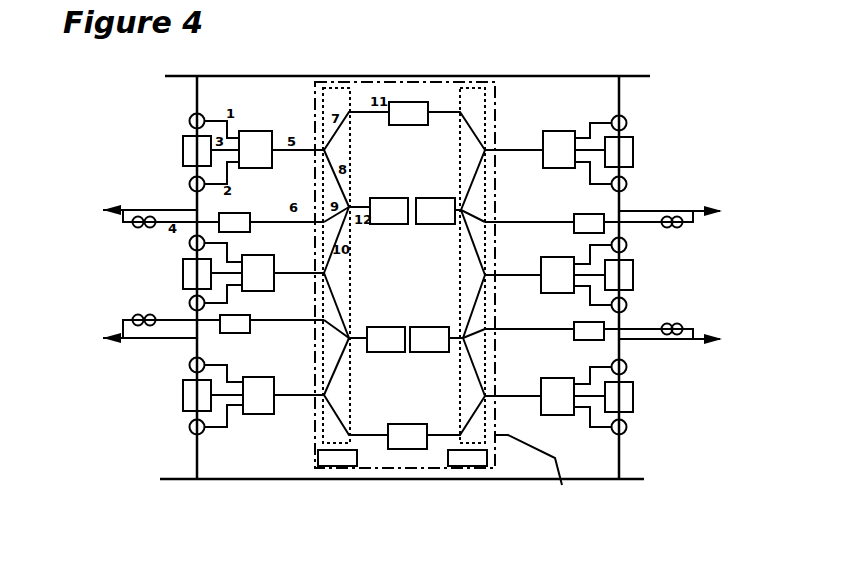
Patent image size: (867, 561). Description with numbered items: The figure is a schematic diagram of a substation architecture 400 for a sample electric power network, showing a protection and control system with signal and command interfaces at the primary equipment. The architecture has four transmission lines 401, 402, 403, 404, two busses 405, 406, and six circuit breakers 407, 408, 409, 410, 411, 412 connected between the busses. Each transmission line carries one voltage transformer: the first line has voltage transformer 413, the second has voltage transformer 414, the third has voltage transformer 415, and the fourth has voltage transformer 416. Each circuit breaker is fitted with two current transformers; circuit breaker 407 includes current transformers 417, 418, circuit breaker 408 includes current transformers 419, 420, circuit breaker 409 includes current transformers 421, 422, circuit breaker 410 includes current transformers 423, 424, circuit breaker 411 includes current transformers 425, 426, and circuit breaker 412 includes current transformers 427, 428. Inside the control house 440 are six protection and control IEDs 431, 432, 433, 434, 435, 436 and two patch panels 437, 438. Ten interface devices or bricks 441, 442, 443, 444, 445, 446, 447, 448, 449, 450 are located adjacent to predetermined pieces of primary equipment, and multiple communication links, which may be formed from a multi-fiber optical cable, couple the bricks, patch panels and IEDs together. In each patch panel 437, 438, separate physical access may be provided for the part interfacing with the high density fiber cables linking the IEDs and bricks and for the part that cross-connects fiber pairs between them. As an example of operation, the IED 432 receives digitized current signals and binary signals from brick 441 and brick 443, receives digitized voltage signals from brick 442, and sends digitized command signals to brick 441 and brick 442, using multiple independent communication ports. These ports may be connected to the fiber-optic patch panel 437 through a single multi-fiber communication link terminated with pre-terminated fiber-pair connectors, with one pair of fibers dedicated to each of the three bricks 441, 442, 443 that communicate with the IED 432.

The substation architecture 400 is at (515, 242).
The transmission line 401 is at (100, 210).
The transmission line 402 is at (100, 338).
The transmission line 403 is at (722, 209).
The transmission line 404 is at (724, 338).
The bus 405 is at (168, 75).
The bus 406 is at (172, 482).
The circuit breaker 407 is at (183, 150).
The circuit breaker 408 is at (183, 273).
The circuit breaker 409 is at (182, 395).
The circuit breaker 410 is at (633, 152).
The circuit breaker 411 is at (633, 275).
The circuit breaker 412 is at (633, 397).
The voltage transformer 413 is at (133, 228).
The voltage transformer 414 is at (131, 313).
The voltage transformer 415 is at (694, 226).
The voltage transformer 416 is at (700, 327).
The current transformer 417 is at (189, 121).
The current transformer 418 is at (189, 184).
The current transformer 419 is at (189, 243).
The current transformer 420 is at (189, 303).
The current transformer 421 is at (189, 365).
The current transformer 422 is at (189, 427).
The current transformer 423 is at (627, 122).
The current transformer 424 is at (627, 184).
The current transformer 425 is at (627, 245).
The current transformer 426 is at (627, 305).
The current transformer 427 is at (627, 367).
The current transformer 428 is at (627, 427).
The protection and control IED 431 is at (400, 126).
The protection and control IED 432 is at (378, 198).
The protection and control IED 433 is at (424, 224).
The protection and control IED 434 is at (374, 327).
The protection and control IED 435 is at (418, 352).
The protection and control IED 436 is at (400, 424).
The patch panel 437 is at (345, 466).
The patch panel 438 is at (483, 466).
The control house 440 is at (562, 485).
The interface device (brick) 441 is at (243, 131).
The interface device (brick) 442 is at (237, 213).
The interface device (brick) 443 is at (258, 255).
The interface device (brick) 444 is at (246, 315).
The interface device (brick) 445 is at (253, 377).
The interface device (brick) 446 is at (552, 131).
The interface device (brick) 447 is at (578, 214).
The interface device (brick) 448 is at (553, 257).
The interface device (brick) 449 is at (578, 323).
The interface device (brick) 450 is at (548, 378).